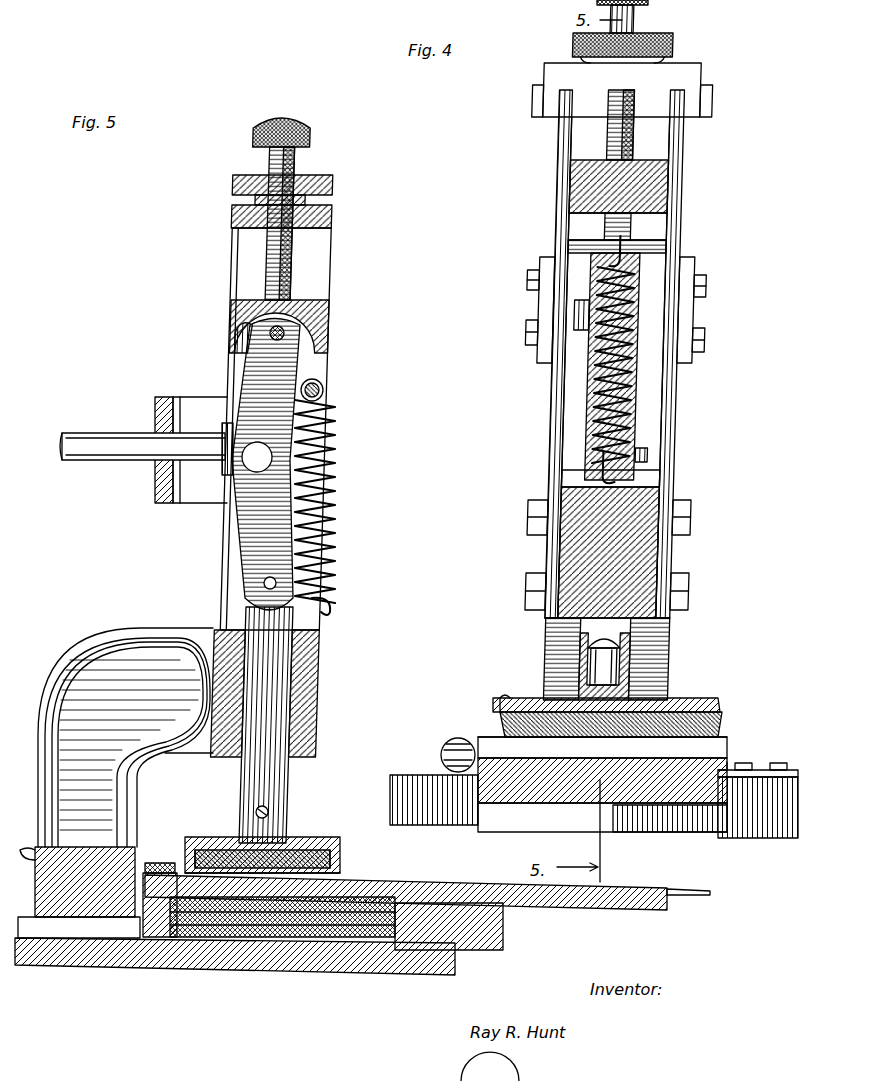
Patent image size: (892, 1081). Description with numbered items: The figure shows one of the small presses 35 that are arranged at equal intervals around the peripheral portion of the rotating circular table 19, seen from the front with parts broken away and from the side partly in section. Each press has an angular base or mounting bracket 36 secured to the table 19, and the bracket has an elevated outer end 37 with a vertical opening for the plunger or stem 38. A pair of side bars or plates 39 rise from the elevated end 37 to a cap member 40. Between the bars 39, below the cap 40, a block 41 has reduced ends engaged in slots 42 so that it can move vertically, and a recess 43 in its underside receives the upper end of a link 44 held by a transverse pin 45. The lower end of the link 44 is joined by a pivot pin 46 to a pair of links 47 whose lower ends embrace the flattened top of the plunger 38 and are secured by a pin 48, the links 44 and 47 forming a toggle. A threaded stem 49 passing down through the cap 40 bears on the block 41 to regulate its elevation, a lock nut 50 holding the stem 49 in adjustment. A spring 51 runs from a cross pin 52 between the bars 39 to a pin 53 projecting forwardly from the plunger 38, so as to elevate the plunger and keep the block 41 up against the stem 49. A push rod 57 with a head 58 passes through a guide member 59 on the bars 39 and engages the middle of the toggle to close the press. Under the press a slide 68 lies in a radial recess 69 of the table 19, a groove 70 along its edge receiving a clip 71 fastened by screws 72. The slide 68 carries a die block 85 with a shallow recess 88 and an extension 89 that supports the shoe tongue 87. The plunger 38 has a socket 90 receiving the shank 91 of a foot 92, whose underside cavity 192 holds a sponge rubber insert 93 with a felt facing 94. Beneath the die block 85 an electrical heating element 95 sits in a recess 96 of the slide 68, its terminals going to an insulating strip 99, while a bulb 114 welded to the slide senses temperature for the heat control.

In FIG. 5, the circular table 19 is at (70, 962).
In FIG. 4, the small press 35 is at (723, 354).
In FIG. 5, the small press 35 is at (142, 547).
In FIG. 4, the angular base or mounting bracket 36 is at (550, 642).
In FIG. 5, the angular base or mounting bracket 36 is at (85, 642).
In FIG. 4, the elevated outer end 37 is at (645, 565).
In FIG. 5, the elevated outer end 37 is at (312, 698).
In FIG. 4, the plunger or stem 38 is at (585, 480).
In FIG. 5, the plunger or stem 38 is at (295, 773).
In FIG. 4, the side bars or plates 39 is at (552, 447).
In FIG. 5, the side bars or plates 39 is at (222, 607).
In FIG. 4, the cap member 40 is at (697, 70).
In FIG. 5, the cap member 40 is at (238, 215).
In FIG. 4, the block 41 is at (575, 188).
In FIG. 5, the block 41 is at (318, 308).
In FIG. 4, the slots 42 is at (562, 147).
In FIG. 5, the recess 43 is at (322, 330).
In FIG. 4, the link 44 is at (612, 226).
In FIG. 5, the link 44 is at (265, 373).
In FIG. 5, the transverse pin 45 is at (270, 328).
In FIG. 4, the pivot pin 46 is at (582, 312).
In FIG. 5, the pivot pin 46 is at (258, 452).
In FIG. 4, the links 47 is at (645, 400).
In FIG. 5, the links 47 is at (250, 530).
In FIG. 4, the pin 48 is at (650, 457).
In FIG. 5, the pin 48 is at (264, 583).
In FIG. 4, the threaded stem 49 is at (630, 140).
In FIG. 5, the threaded stem 49 is at (300, 165).
In FIG. 4, the lock nut 50 is at (668, 33).
In FIG. 5, the lock nut 50 is at (240, 182).
In FIG. 4, the spring 51 is at (635, 275).
In FIG. 5, the spring 51 is at (332, 528).
In FIG. 4, the cross pin 52 is at (645, 245).
In FIG. 5, the cross pin 52 is at (324, 390).
In FIG. 4, the pin 53 is at (605, 472).
In FIG. 5, the pin 53 is at (332, 607).
In FIG. 5, the push rod 57 is at (82, 432).
In FIG. 5, the head 58 is at (225, 478).
In FIG. 4, the guide member 59 is at (700, 312).
In FIG. 5, the guide member 59 is at (157, 410).
In FIG. 4, the slide 68 is at (510, 785).
In FIG. 5, the slide 68 is at (505, 923).
In FIG. 4, the radial recess 69 is at (688, 810).
In FIG. 5, the radial recess 69 is at (455, 942).
In FIG. 4, the channel or groove 70 is at (718, 792).
In FIG. 4, the clip 71 is at (758, 780).
In FIG. 4, the screws 72 is at (772, 773).
In FIG. 5, the die block 85 is at (400, 880).
In FIG. 4, the tongue 87 is at (565, 740).
In FIG. 5, the tongue 87 is at (505, 884).
In FIG. 5, the shallow recess 88 is at (340, 852).
In FIG. 4, the extension 89 is at (602, 748).
In FIG. 5, the extension 89 is at (640, 907).
In FIG. 4, the socket 90 is at (640, 645).
In FIG. 4, the attaching stem or shank 91 is at (625, 670).
In FIG. 5, the attaching stem or shank 91 is at (260, 792).
In FIG. 4, the foot 92 is at (720, 730).
In FIG. 5, the foot 92 is at (320, 838).
In FIG. 4, the insert 93 is at (715, 705).
In FIG. 5, the insert 93 is at (292, 838).
In FIG. 4, the felt facing 94 is at (520, 700).
In FIG. 5, the felt facing 94 is at (232, 838).
In FIG. 5, the electrical heating element 95 is at (370, 937).
In FIG. 5, the recess 96 is at (333, 937).
In FIG. 5, the insulating strip 99 is at (165, 864).
In FIG. 4, the bulb 114 is at (448, 752).
In FIG. 4, the cavity 192 is at (730, 772).
In FIG. 5, the cavity 192 is at (200, 840).